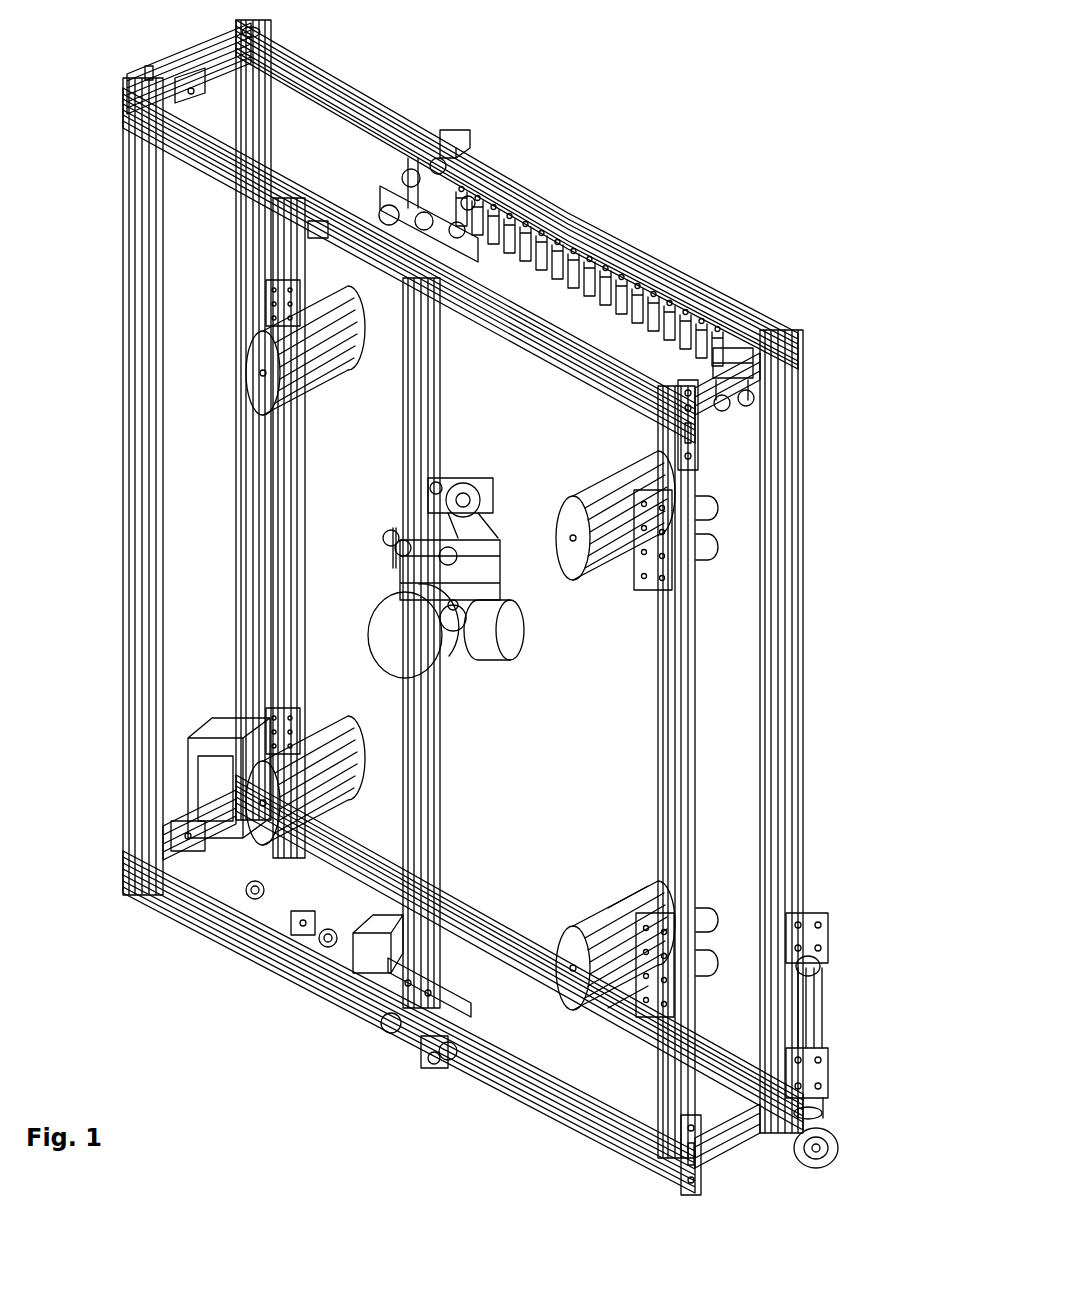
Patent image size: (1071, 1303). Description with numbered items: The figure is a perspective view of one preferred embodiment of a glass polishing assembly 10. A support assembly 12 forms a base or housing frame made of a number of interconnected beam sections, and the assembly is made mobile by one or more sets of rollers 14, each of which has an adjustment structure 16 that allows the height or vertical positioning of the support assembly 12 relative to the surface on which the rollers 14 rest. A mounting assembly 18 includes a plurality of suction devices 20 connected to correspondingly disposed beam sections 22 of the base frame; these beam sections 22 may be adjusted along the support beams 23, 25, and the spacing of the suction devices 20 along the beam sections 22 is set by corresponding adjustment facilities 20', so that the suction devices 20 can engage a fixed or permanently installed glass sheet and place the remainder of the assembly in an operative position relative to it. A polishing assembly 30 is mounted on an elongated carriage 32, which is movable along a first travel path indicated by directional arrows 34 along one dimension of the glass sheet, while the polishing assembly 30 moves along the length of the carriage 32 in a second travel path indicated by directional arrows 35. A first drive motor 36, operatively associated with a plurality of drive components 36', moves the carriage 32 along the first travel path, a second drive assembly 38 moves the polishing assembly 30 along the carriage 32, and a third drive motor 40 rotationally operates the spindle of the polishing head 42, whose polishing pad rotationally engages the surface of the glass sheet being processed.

The glass polishing assembly 10 is at (710, 158).
The support assembly 12 is at (796, 437).
The rollers 14 is at (858, 1122).
The adjustment structure 16 is at (857, 990).
The mounting assembly 18 is at (610, 860).
The suction devices 20 is at (460, 648).
The adjustment facilities 20' is at (719, 736).
The beam sections 22 is at (298, 490).
The support beam 23 is at (532, 1097).
The support beam 25 is at (262, 152).
The polishing assembly 30 is at (508, 470).
The carriage 32 is at (432, 780).
The directional arrows 34 is at (353, 248).
The directional arrows 35 is at (463, 413).
The first drive motor 36 is at (443, 161).
The drive components 36' is at (509, 561).
The second drive assembly 38 is at (500, 532).
The third drive motor 40 is at (503, 622).
The polishing head 42 is at (392, 627).